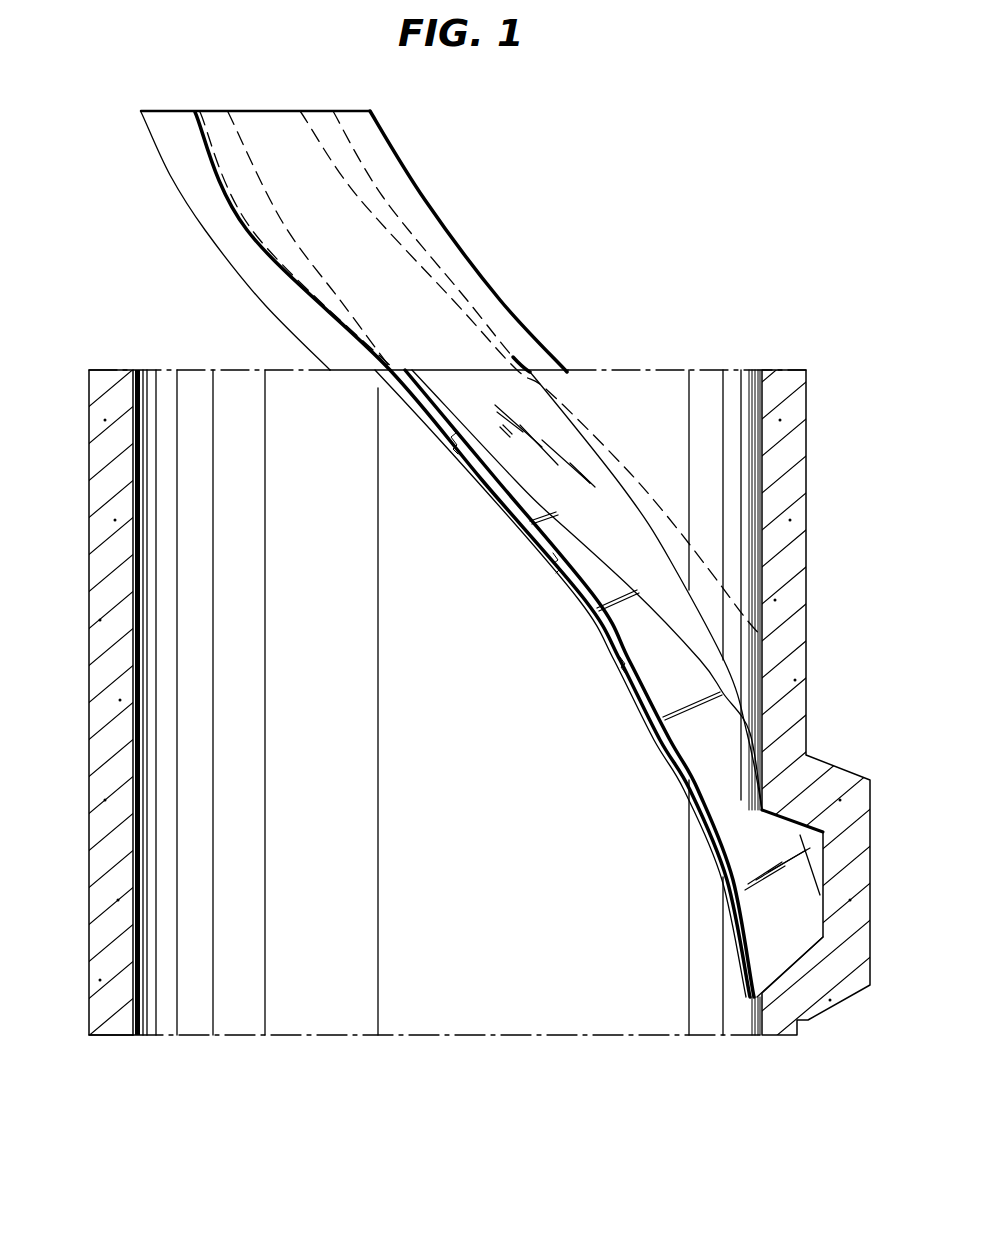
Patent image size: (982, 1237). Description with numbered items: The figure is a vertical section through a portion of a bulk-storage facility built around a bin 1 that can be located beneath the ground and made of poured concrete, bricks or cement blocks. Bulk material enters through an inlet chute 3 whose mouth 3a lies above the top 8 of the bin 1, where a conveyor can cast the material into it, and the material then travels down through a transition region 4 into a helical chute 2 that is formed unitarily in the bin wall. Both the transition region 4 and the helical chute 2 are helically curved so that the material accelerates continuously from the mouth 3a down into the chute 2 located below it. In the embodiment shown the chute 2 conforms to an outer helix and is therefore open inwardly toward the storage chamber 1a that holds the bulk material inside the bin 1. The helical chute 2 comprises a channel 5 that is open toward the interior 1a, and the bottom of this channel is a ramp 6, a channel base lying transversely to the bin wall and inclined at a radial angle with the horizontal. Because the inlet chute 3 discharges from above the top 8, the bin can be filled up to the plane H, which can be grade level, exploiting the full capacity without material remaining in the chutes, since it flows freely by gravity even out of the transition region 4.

The bin 1 is at (128, 730).
The storage chamber 1a is at (136, 1017).
The helical chute 2 is at (503, 533).
The inlet chute 3 is at (436, 179).
The mouth 3a is at (330, 111).
The transition region 4 is at (474, 554).
The channel 5 is at (823, 888).
The ramp 6 is at (777, 958).
The top 8 is at (664, 367).
The fill plane H is at (230, 368).